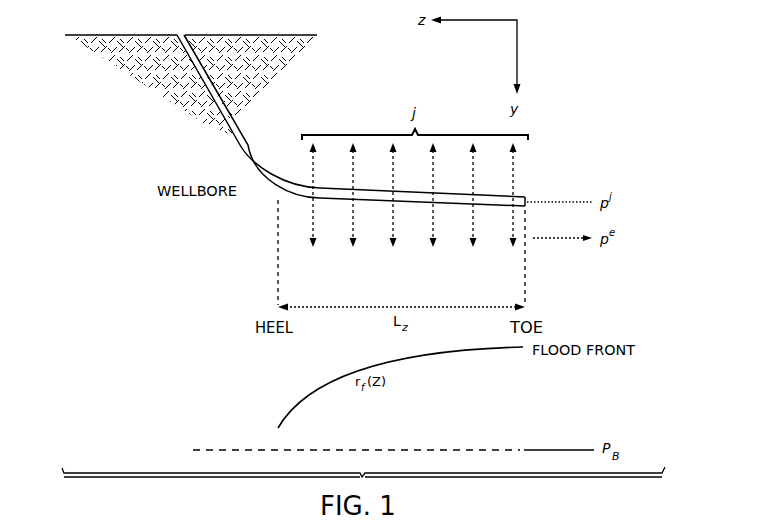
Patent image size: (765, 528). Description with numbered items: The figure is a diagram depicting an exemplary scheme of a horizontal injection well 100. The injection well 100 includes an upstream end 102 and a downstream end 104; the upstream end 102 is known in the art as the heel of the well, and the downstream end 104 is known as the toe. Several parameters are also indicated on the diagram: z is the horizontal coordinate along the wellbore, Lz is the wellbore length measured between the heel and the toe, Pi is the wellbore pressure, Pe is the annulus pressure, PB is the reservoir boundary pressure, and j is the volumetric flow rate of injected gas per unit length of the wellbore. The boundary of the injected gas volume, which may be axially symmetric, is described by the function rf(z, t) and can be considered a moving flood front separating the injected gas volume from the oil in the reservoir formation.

The horizontal injection well 100 is at (384, 120).
The upstream end 102 is at (270, 141).
The downstream end 104 is at (534, 195).